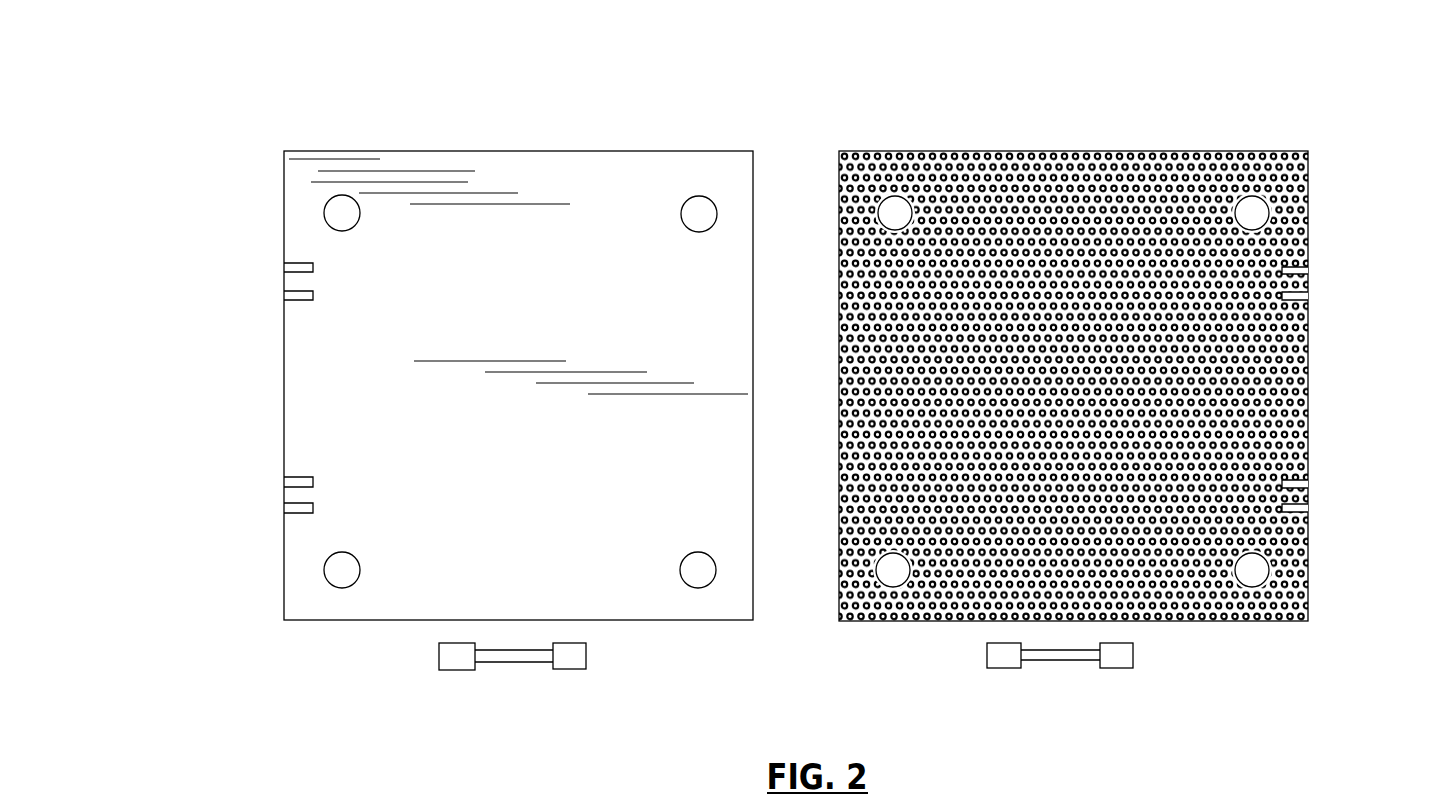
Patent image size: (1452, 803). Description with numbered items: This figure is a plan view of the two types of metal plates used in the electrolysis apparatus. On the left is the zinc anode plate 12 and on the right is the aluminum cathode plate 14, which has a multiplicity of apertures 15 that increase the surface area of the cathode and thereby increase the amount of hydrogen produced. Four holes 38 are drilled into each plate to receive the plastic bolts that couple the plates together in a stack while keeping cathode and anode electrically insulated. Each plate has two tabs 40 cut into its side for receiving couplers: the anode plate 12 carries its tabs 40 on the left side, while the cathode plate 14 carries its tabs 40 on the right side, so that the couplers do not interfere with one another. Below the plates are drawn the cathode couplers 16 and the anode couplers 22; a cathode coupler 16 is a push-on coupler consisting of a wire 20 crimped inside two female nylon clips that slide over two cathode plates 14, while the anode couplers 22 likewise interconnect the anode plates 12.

The zinc anode plate 12 is at (358, 396).
The aluminum cathode plate 14 is at (1128, 346).
The apertures 15 is at (1118, 170).
The cathode couplers 16 is at (1120, 657).
The wire 20 is at (1117, 684).
The anode couplers 22 is at (562, 662).
The holes 38 is at (341, 196).
The tabs 40 is at (283, 281).